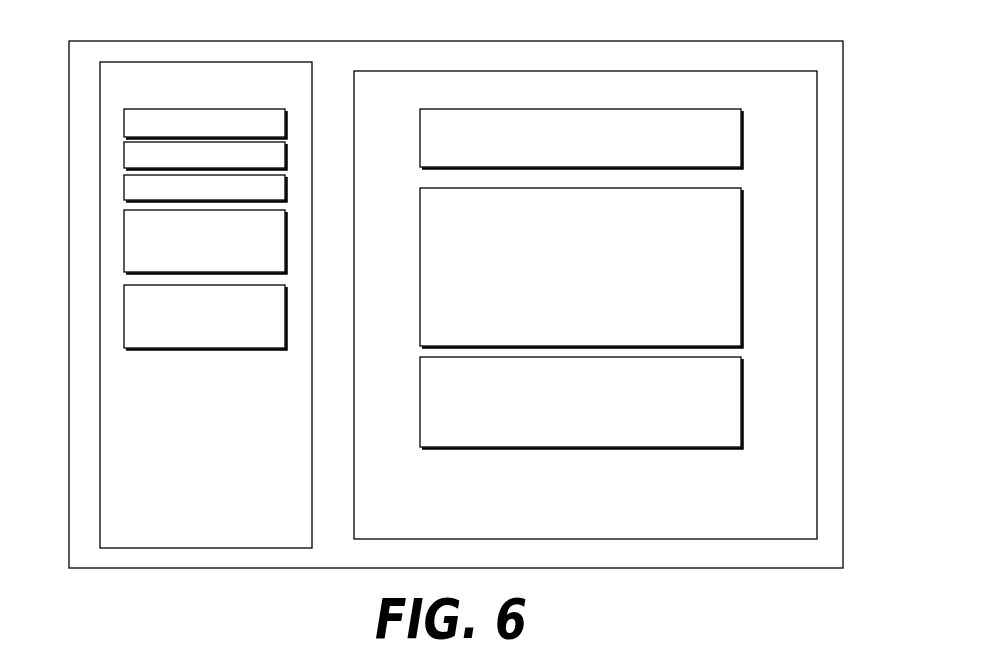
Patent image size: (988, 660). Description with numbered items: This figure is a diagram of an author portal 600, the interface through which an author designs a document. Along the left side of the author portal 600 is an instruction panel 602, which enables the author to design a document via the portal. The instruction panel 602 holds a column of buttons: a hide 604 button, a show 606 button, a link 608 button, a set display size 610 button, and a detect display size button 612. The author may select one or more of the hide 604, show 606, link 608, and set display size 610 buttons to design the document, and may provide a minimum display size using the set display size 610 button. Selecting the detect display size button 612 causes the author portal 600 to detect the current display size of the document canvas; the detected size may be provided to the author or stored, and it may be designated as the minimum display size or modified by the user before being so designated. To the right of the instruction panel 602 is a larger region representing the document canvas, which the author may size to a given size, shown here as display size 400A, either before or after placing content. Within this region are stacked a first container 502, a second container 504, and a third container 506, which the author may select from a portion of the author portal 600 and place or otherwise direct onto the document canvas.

The author portal 600 is at (770, 26).
The display size 400A is at (817, 405).
The instruction panel 602 is at (163, 411).
The hide button 604 is at (124, 123).
The show button 606 is at (124, 157).
The link button 608 is at (124, 188).
The set display size button 610 is at (124, 241).
The detect display size button 612 is at (124, 315).
The first container 502 is at (595, 150).
The second container 504 is at (595, 278).
The third container 506 is at (595, 412).